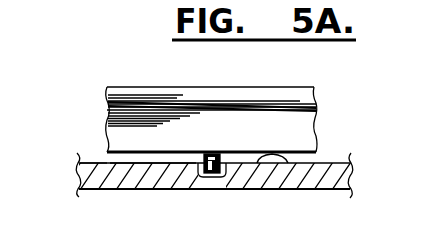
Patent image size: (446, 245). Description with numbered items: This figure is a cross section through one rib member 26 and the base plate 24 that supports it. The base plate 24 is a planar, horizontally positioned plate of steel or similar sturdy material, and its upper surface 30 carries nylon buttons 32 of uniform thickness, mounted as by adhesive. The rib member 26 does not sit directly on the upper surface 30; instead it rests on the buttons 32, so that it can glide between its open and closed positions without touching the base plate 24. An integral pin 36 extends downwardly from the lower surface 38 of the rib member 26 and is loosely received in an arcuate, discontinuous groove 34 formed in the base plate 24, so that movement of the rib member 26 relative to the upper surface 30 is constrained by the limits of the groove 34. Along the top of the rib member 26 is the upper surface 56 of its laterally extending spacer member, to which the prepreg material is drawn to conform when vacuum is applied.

The base plate 24 is at (360, 168).
The rib member 26 is at (291, 77).
The upper surface 30 is at (95, 162).
The nylon button 32 is at (273, 158).
The groove 34 is at (199, 174).
The pin 36 is at (218, 155).
The lower surface 38 is at (145, 157).
The upper surface 56 is at (147, 101).